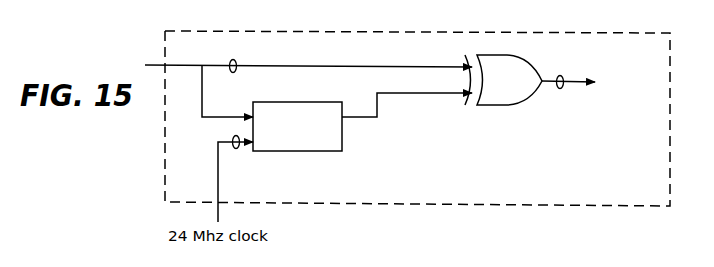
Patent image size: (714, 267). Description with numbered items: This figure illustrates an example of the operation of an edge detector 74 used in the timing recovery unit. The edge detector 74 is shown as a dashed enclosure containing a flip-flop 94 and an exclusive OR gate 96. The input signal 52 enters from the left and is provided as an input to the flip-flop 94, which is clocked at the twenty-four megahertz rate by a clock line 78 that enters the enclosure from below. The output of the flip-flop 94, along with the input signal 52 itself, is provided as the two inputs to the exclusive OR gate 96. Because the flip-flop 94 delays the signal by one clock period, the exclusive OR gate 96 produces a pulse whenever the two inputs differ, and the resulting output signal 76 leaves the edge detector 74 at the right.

The input signal 52 is at (236, 60).
The edge detector 74 is at (652, 180).
The output signal 76 is at (560, 75).
The 24 MHz clock input 78 is at (236, 149).
The flip-flop 94 is at (322, 151).
The exclusive OR (XOR) gate 96 is at (505, 105).